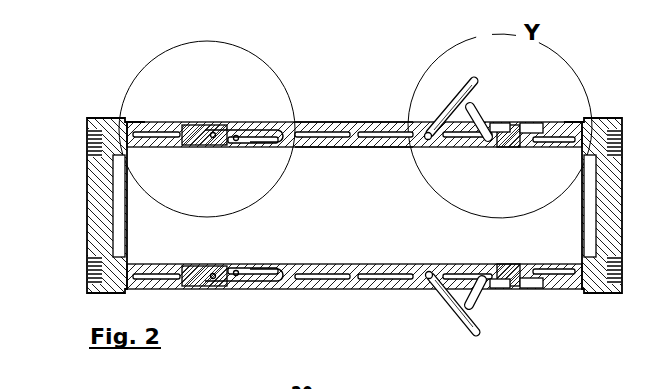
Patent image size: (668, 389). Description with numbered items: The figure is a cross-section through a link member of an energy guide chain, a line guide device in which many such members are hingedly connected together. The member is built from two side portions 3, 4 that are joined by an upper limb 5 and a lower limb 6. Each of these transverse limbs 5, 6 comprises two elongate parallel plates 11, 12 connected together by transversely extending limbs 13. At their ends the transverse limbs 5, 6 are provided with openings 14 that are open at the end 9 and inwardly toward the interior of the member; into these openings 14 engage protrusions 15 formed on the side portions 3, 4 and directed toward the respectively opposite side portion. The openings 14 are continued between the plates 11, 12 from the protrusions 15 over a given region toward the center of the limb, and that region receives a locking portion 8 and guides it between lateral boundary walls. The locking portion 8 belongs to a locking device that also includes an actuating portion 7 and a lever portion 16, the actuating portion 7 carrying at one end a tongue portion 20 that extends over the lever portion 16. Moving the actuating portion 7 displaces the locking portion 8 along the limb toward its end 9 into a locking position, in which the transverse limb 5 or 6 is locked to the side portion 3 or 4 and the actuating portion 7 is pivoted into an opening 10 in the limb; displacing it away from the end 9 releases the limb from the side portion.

The side portion 3 is at (607, 177).
The side portion 4 is at (97, 187).
The upper limb 5 is at (320, 116).
The lower limb 6 is at (367, 295).
The actuating portion 7 is at (244, 116).
The locking portion 8 is at (194, 137).
The end 9 is at (140, 124).
The opening 10 is at (498, 125).
The plate 11 is at (367, 124).
The plate 12 is at (372, 146).
The transversely extending limb 13 is at (354, 135).
The opening 14 is at (459, 138).
The protrusion 15 is at (136, 143).
The lever portion 16 is at (218, 133).
The tongue portion 20 is at (236, 132).